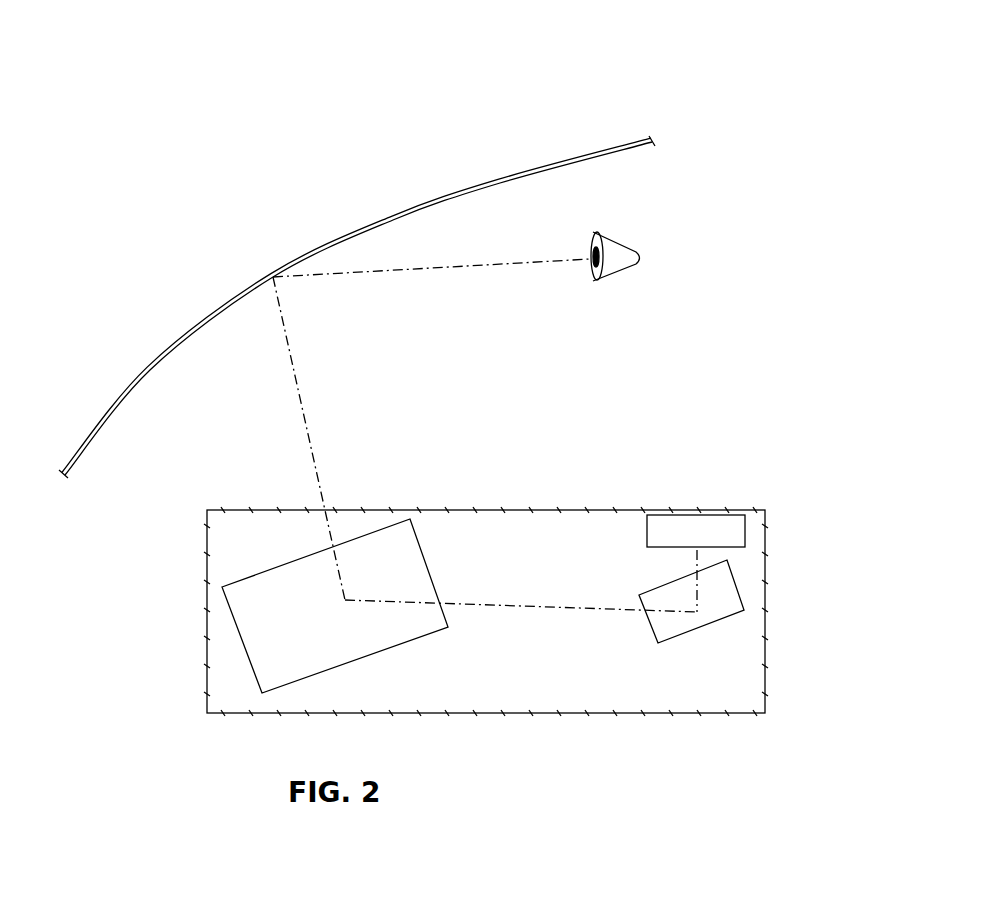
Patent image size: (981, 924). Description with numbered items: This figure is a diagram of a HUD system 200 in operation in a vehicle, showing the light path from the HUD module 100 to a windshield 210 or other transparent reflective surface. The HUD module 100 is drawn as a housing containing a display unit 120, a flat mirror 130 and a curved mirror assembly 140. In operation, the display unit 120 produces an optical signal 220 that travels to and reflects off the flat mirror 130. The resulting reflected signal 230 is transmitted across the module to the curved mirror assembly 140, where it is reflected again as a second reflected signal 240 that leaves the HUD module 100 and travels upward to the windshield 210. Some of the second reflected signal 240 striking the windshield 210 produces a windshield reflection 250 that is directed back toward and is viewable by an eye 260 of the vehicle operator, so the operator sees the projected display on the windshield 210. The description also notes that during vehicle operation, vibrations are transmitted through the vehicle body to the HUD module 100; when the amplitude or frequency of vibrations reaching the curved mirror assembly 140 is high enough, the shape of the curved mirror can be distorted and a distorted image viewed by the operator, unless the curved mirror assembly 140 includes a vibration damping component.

The HUD module 100 is at (788, 600).
The display unit 120 is at (695, 511).
The flat mirror 130 is at (673, 625).
The curved mirror assembly 140 is at (370, 632).
The HUD system 200 is at (750, 70).
The windshield 210 is at (393, 219).
The optical signal 220 is at (693, 557).
The reflected signal 230 is at (505, 608).
The second reflected signal 240 is at (299, 393).
The windshield reflection 250 is at (432, 270).
The eye 260 is at (632, 244).